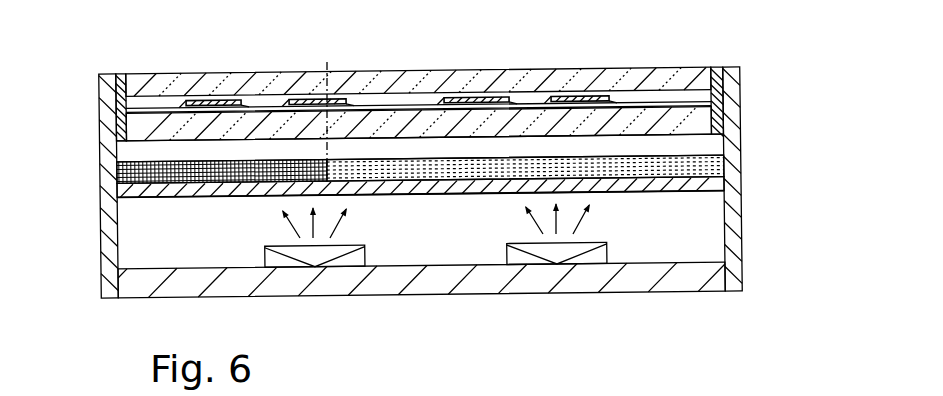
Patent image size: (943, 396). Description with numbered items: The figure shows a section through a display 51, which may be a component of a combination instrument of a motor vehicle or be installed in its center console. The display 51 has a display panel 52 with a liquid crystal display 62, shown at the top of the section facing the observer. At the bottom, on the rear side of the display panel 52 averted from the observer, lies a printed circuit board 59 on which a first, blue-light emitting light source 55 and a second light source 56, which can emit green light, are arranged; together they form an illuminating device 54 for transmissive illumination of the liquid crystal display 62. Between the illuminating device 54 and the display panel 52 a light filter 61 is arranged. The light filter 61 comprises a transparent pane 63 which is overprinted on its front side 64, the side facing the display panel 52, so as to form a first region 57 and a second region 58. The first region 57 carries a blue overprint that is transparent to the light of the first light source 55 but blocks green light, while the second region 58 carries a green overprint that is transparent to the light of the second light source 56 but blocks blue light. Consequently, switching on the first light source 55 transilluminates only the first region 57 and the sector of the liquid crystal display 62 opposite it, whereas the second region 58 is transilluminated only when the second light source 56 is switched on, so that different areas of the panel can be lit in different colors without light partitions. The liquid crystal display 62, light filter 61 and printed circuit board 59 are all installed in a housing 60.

The display 51 is at (127, 51).
The display panel 52 is at (487, 62).
The front side 64 is at (403, 176).
The liquid crystal display 62 is at (690, 122).
The first region 57 is at (120, 172).
The second region 58 is at (685, 164).
The transparent pane 63 is at (693, 188).
The light filter 61 is at (188, 203).
The housing 60 is at (733, 247).
The printed circuit board 59 is at (428, 283).
The second light source 56 is at (278, 262).
The first light source 55 is at (520, 253).
The illuminating device 54 is at (642, 244).